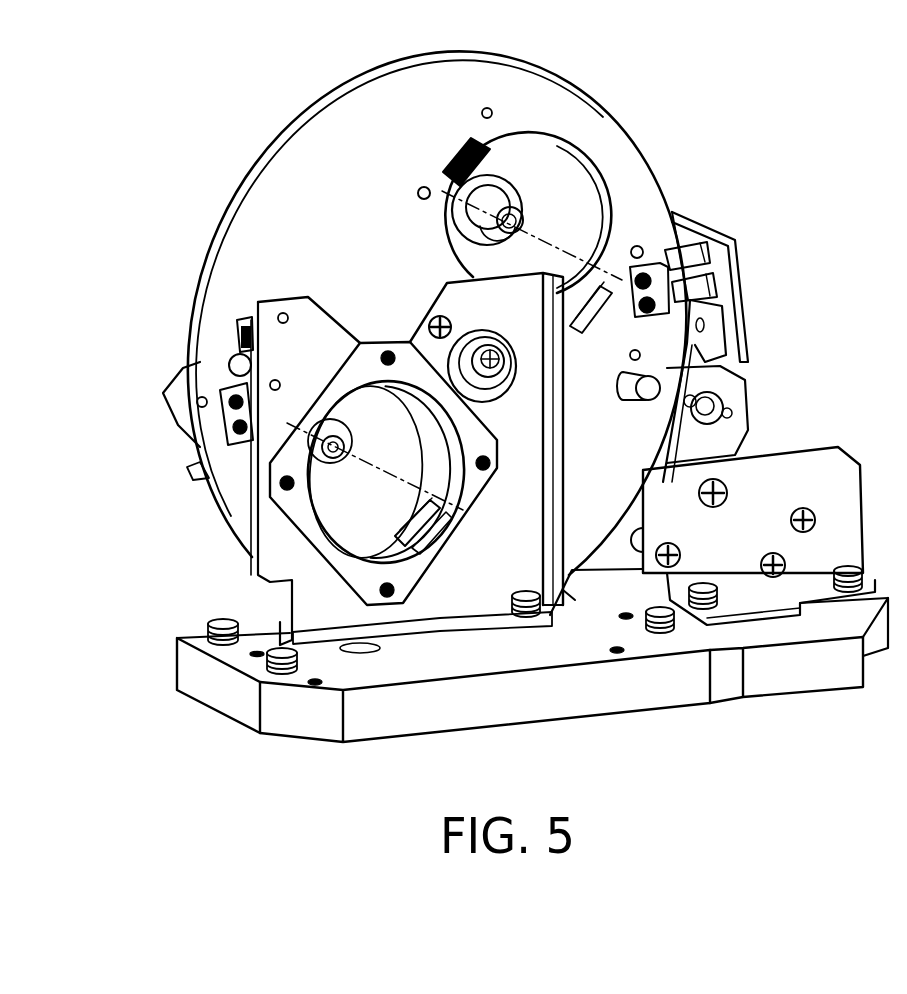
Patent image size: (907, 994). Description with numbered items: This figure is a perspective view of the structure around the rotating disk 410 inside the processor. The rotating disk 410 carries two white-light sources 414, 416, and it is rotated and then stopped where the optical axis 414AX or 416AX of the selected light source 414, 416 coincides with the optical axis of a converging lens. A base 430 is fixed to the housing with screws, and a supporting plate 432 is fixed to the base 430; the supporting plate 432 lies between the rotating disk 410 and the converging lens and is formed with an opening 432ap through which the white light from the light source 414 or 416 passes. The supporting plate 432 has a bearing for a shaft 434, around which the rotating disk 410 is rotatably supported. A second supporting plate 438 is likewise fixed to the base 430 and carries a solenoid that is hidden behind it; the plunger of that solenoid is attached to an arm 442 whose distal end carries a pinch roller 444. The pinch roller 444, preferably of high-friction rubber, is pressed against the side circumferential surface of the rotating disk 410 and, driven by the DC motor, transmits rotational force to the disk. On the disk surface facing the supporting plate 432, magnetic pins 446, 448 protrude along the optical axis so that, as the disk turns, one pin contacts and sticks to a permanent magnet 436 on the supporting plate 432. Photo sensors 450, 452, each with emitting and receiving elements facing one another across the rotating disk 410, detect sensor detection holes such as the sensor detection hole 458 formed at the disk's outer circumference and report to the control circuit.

The rotating disk 410 is at (318, 116).
The light source 416 is at (533, 162).
The optical axis 416AX is at (590, 229).
The photo sensor 450 is at (700, 226).
The photo sensor 452 is at (714, 280).
The pinch roller 444 is at (687, 373).
The magnetic pin 448 is at (634, 400).
The arm 442 is at (727, 440).
The supporting plate 438 is at (846, 500).
The shaft 434 is at (492, 358).
The supporting plate 432 is at (530, 453).
The opening 432ap is at (380, 392).
The light source 414 is at (328, 505).
The optical axis 414AX is at (418, 452).
The permanent magnet 436 is at (237, 338).
The magnetic pin 446 is at (236, 368).
The sensor detection hole 458 is at (200, 405).
The base 430 is at (210, 688).